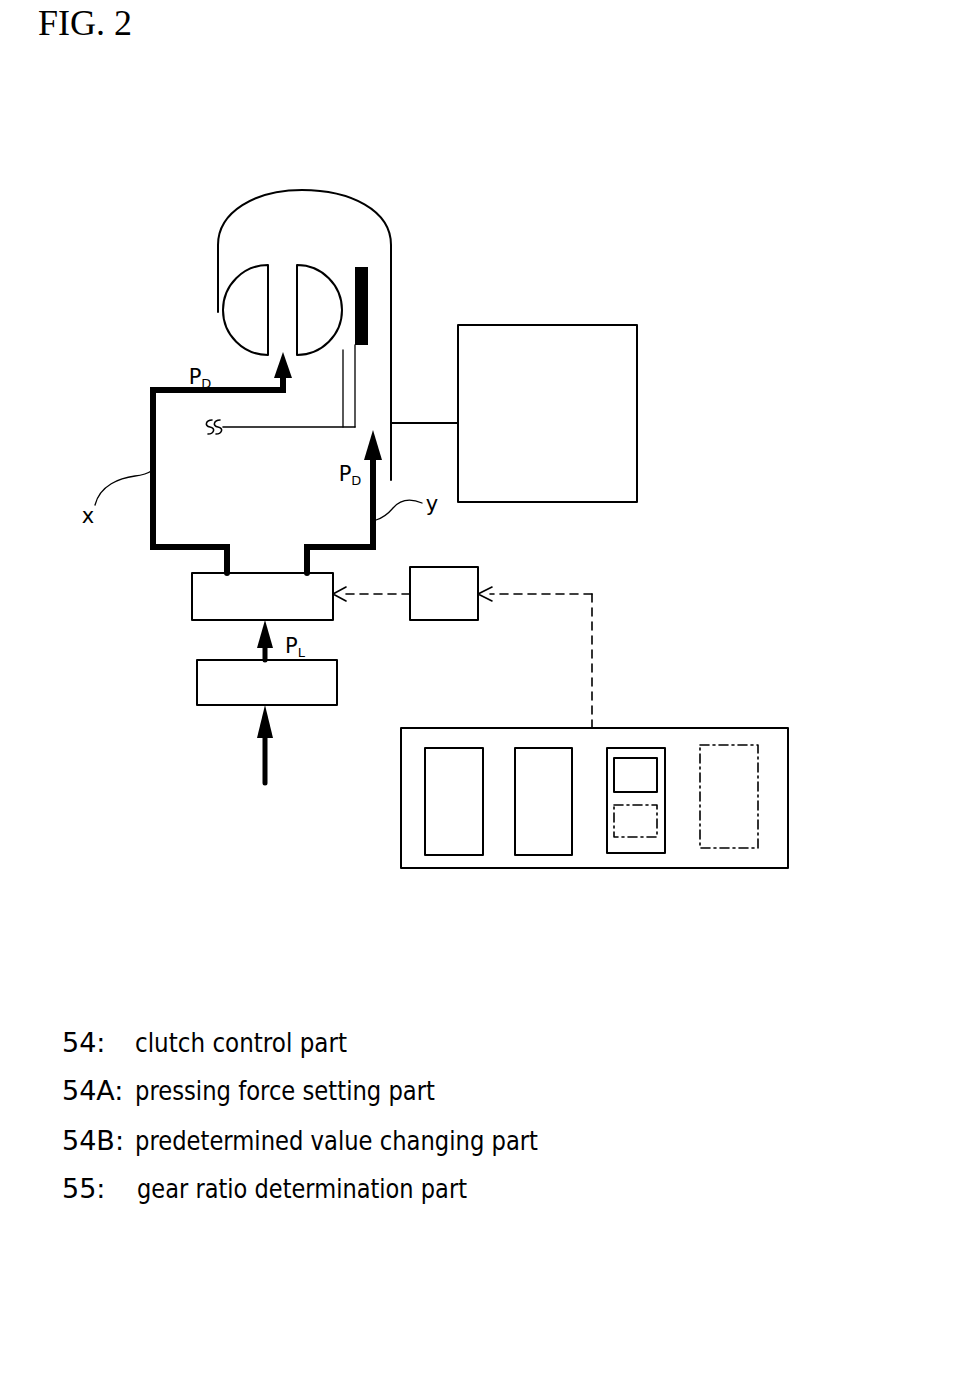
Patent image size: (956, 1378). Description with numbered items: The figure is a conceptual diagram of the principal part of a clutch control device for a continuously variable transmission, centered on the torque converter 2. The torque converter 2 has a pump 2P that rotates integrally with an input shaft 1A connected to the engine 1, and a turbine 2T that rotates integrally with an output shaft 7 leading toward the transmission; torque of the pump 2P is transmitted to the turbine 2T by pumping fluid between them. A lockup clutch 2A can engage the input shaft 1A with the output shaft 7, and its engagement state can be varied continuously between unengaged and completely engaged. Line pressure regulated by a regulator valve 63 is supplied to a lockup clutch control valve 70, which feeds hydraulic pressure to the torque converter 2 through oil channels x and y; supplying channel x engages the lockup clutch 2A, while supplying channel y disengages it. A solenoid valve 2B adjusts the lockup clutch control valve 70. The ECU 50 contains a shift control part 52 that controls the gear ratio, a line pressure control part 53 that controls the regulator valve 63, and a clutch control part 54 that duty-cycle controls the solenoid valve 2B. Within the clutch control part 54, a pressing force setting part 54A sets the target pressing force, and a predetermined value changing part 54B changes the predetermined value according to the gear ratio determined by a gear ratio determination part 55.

The engine 1 is at (637, 355).
The input shaft 1A is at (416, 424).
The torque converter 2 is at (216, 156).
The lockup clutch 2A is at (370, 325).
The solenoid valve 2B is at (425, 567).
The pump 2P is at (232, 335).
The turbine 2T is at (312, 266).
The output shaft 7 is at (290, 428).
The ECU 50 is at (401, 835).
The shift control part 52 is at (456, 748).
The line pressure control part 53 is at (550, 748).
The clutch control part 54 is at (612, 748).
The pressing force setting part 54A is at (622, 758).
The predetermined value changing part 54B is at (655, 840).
The gear ratio determination part 55 is at (758, 802).
The regulator valve 63 is at (242, 705).
The lockup clutch control valve 70 is at (192, 597).